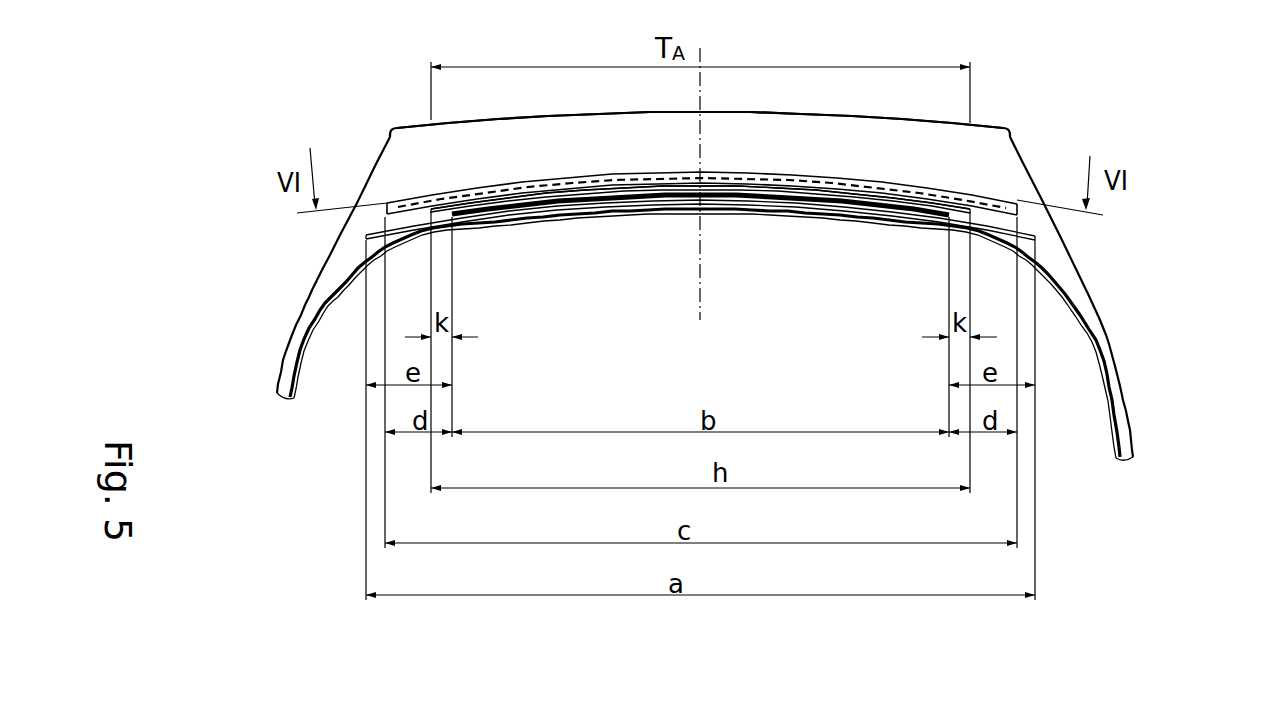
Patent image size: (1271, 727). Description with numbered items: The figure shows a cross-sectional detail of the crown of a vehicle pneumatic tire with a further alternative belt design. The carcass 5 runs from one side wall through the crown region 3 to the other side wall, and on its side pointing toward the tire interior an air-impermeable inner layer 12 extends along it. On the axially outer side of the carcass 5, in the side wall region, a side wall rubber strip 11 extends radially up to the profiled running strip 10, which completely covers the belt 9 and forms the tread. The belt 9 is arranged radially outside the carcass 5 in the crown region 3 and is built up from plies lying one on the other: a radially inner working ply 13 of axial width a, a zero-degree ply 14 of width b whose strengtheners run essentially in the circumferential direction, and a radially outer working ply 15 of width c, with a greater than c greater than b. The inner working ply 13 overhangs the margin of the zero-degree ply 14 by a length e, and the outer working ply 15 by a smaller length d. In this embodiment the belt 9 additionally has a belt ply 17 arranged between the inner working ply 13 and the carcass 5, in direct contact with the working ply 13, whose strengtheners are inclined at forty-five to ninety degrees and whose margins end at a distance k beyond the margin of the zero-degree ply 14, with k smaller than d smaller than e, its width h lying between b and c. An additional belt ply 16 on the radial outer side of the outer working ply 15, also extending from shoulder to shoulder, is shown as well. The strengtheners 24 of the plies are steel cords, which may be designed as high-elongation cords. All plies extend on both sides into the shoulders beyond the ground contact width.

The crown region 3 is at (763, 110).
The carcass 5 is at (1114, 392).
The belt 9 is at (934, 184).
The profiled running strip 10 is at (820, 155).
The side wall rubber strip 11 is at (1130, 435).
The inner layer 12 is at (1112, 432).
The radially inner working ply 13 is at (940, 220).
The 0° ply 14 is at (852, 190).
The radially outer working ply 15 is at (993, 202).
The additional belt ply 16 is at (880, 183).
The belt ply 17 is at (888, 200).
The strengtheners 24 is at (807, 192).